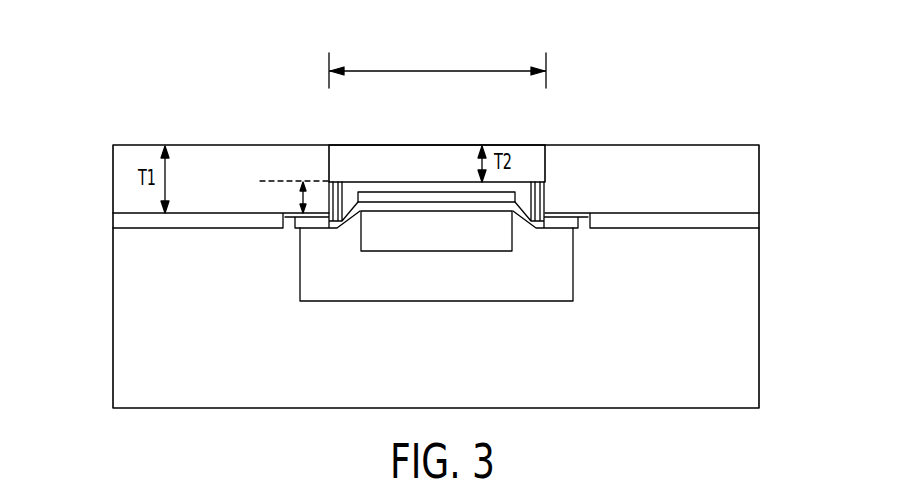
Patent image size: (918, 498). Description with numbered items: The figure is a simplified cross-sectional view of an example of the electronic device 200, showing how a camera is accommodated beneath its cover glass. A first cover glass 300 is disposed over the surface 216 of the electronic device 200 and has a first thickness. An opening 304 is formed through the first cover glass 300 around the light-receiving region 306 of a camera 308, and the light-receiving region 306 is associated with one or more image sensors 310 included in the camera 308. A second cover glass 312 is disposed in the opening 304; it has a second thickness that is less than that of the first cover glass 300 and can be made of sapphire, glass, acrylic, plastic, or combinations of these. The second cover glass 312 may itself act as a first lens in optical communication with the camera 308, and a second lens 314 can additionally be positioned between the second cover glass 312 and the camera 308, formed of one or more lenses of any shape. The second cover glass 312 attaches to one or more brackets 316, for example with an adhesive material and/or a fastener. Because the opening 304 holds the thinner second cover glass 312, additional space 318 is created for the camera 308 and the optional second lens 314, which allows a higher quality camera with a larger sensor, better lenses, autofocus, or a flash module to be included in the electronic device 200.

The electronic device 200 is at (684, 90).
The surface 216 is at (137, 228).
The first cover glass 300 is at (753, 186).
The opening 304 is at (437, 68).
The light-receiving region 306 is at (436, 270).
The camera 308 is at (565, 289).
The image sensor 310 is at (450, 243).
The second cover glass 312 is at (437, 150).
The second lens 314 is at (400, 192).
The bracket 316 is at (579, 224).
The additional space 318 is at (301, 205).